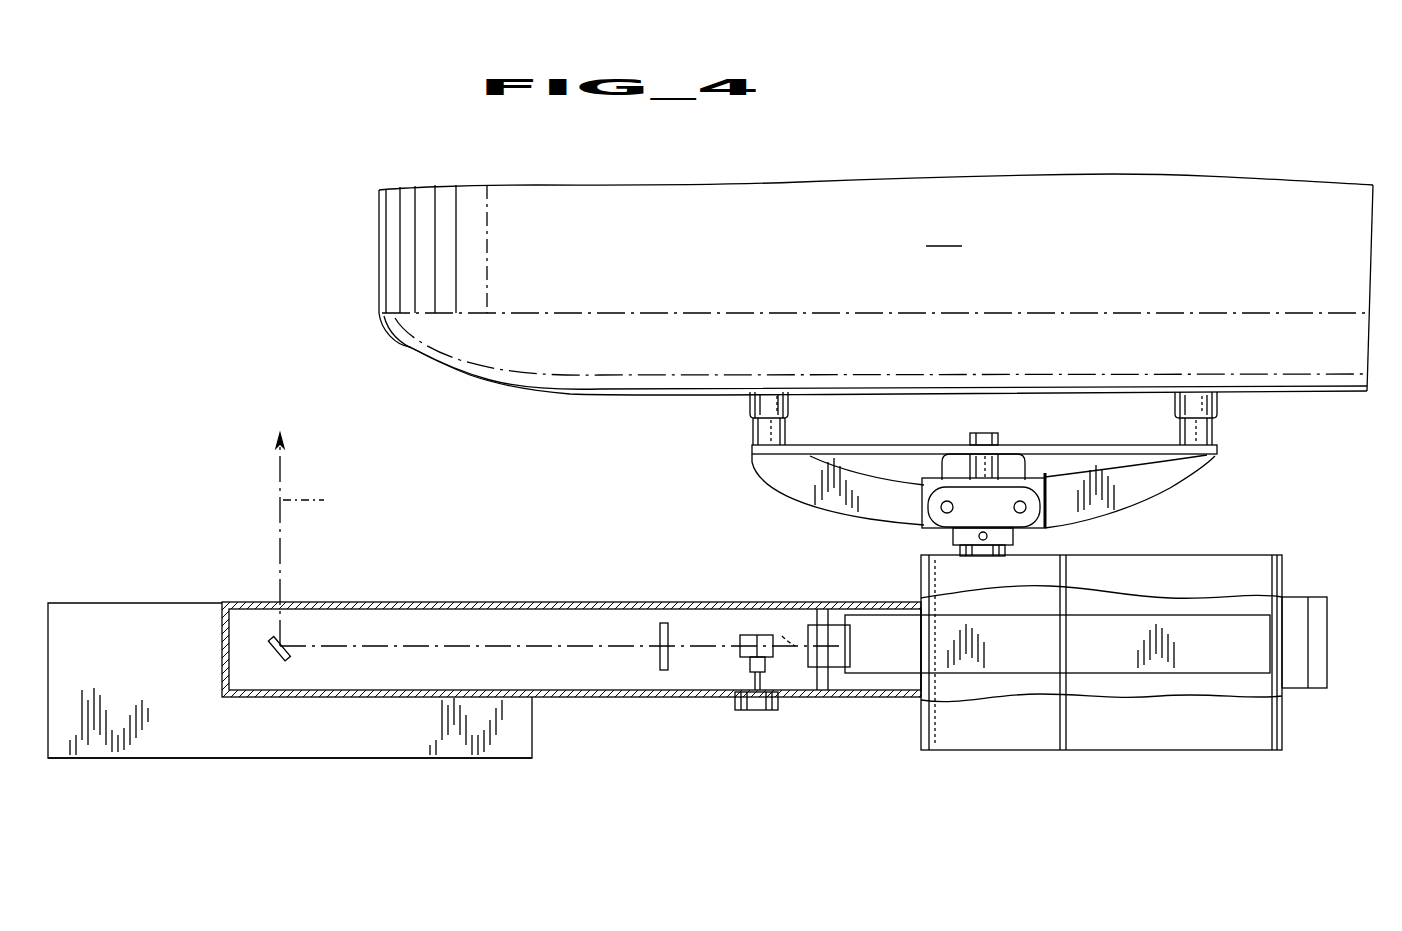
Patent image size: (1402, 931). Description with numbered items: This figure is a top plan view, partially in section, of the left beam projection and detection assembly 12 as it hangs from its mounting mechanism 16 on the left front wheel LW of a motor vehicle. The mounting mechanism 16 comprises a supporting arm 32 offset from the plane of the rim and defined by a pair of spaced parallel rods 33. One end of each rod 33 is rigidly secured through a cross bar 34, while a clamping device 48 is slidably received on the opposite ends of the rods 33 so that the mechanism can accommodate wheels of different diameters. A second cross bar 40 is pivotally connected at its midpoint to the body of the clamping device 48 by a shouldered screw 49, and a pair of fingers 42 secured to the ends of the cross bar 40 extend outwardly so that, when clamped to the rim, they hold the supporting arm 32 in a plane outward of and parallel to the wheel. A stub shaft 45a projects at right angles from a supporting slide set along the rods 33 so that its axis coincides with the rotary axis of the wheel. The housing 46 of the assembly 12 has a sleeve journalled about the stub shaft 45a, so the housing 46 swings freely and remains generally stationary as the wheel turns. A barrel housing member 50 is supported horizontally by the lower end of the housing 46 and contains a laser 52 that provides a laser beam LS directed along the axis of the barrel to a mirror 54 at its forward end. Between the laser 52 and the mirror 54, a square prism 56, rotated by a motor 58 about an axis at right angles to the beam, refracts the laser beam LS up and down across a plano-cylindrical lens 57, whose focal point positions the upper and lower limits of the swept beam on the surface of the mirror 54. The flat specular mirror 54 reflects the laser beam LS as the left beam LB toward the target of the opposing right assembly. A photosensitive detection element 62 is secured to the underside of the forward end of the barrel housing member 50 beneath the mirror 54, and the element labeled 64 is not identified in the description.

The beam projection and detection assembly 12 is at (613, 512).
The mounting mechanism 16 is at (725, 459).
The supporting arm 32 is at (790, 500).
The rods 33 is at (1020, 506).
The cross bar 34 is at (1197, 468).
The cross bar 40 is at (850, 452).
The fingers 42 is at (750, 408).
The stub shaft 45a is at (955, 541).
The housing 46 is at (1124, 652).
The clamping device 48 is at (1037, 480).
The shouldered screw 49 is at (978, 432).
The barrel housing member 50 is at (490, 603).
The laser 52 is at (1083, 649).
The mirror 54 is at (275, 660).
The prism 56 is at (742, 638).
The plano-cylindrical lens 57 is at (655, 631).
The motor 58 is at (750, 711).
The photosensitive detection element 62 is at (121, 601).
The bottom plate 64 is at (155, 760).
The left front wheel LW is at (876, 284).
The left beam LB is at (315, 539).
The laser beam LS is at (788, 629).